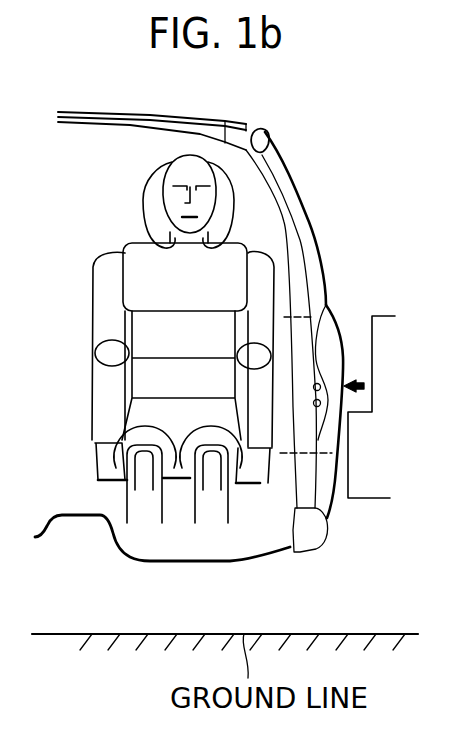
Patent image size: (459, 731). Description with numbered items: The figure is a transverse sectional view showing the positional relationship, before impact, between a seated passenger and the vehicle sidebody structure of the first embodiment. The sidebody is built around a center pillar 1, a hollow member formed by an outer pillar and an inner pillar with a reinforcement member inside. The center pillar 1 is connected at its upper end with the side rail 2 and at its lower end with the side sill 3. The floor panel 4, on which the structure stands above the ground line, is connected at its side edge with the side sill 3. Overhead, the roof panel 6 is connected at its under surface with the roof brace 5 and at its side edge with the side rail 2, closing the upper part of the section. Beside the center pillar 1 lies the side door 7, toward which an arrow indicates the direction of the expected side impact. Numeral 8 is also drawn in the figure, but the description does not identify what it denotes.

The center pillar 1 is at (300, 223).
The side rail 2 is at (267, 132).
The side sill 3 is at (300, 553).
The floor panel 4 is at (237, 563).
The roof brace 5 is at (138, 127).
The roof panel 6 is at (217, 120).
The side door 7 is at (328, 312).
The seat cushion 8 is at (93, 462).